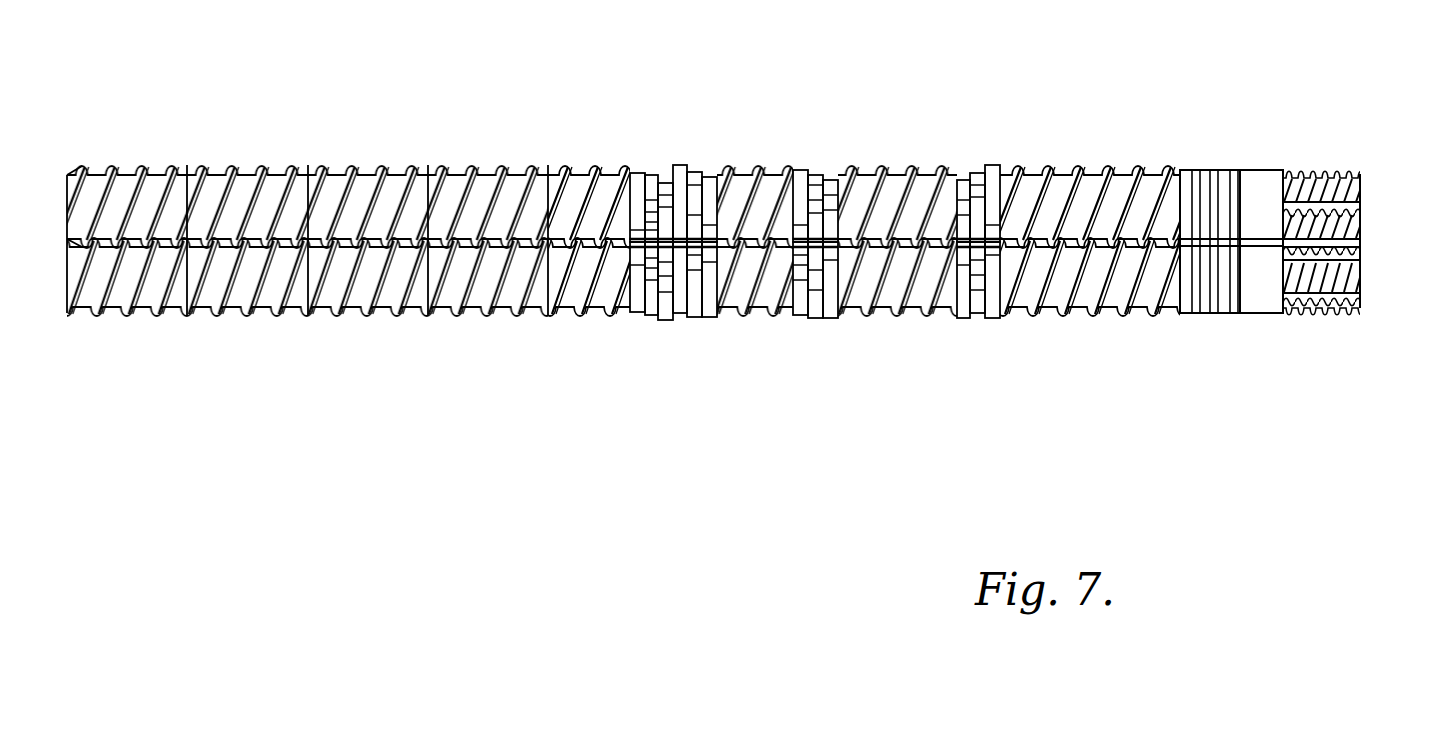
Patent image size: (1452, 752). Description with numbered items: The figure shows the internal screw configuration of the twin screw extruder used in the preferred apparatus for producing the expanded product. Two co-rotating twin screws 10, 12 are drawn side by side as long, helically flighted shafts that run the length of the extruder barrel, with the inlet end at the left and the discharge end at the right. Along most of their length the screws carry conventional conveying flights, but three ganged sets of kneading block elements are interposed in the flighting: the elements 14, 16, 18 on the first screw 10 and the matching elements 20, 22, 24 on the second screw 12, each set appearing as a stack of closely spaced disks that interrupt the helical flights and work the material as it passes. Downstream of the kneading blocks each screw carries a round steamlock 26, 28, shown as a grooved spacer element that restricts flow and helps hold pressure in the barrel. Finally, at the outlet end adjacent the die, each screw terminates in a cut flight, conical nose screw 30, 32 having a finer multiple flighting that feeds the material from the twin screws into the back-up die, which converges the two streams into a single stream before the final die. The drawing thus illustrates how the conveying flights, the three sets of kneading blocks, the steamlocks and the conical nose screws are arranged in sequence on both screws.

The co-rotating twin screw 10 is at (1050, 115).
The co-rotating twin screw 12 is at (955, 327).
The kneading block element 14 is at (700, 162).
The kneading block element 16 is at (828, 165).
The kneading block element 18 is at (990, 155).
The kneading block element 20 is at (687, 322).
The kneading block element 22 is at (836, 325).
The kneading block element 24 is at (980, 320).
The steamlock 26 is at (1225, 162).
The steamlock 28 is at (1228, 318).
The cut flight, conical nose screw 30 is at (1362, 172).
The cut flight, conical nose screw 32 is at (1373, 303).